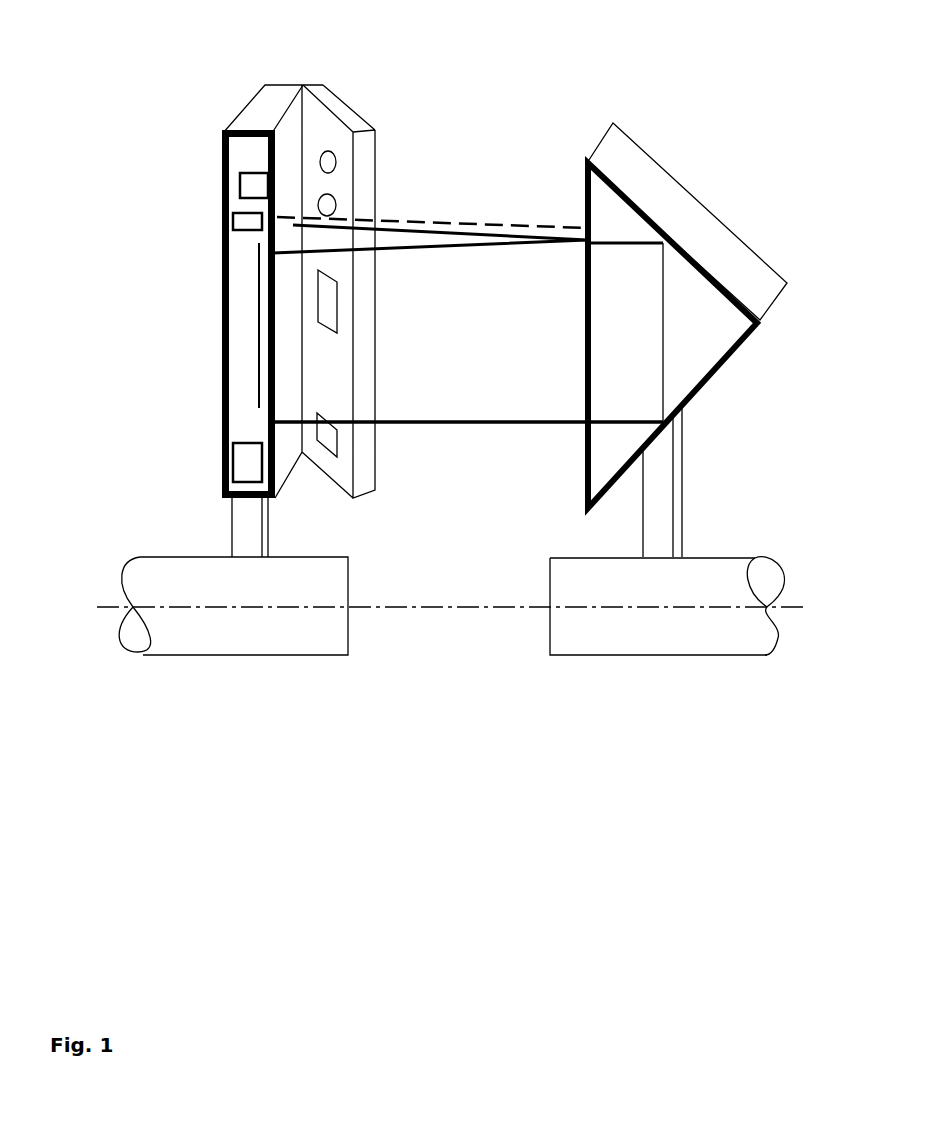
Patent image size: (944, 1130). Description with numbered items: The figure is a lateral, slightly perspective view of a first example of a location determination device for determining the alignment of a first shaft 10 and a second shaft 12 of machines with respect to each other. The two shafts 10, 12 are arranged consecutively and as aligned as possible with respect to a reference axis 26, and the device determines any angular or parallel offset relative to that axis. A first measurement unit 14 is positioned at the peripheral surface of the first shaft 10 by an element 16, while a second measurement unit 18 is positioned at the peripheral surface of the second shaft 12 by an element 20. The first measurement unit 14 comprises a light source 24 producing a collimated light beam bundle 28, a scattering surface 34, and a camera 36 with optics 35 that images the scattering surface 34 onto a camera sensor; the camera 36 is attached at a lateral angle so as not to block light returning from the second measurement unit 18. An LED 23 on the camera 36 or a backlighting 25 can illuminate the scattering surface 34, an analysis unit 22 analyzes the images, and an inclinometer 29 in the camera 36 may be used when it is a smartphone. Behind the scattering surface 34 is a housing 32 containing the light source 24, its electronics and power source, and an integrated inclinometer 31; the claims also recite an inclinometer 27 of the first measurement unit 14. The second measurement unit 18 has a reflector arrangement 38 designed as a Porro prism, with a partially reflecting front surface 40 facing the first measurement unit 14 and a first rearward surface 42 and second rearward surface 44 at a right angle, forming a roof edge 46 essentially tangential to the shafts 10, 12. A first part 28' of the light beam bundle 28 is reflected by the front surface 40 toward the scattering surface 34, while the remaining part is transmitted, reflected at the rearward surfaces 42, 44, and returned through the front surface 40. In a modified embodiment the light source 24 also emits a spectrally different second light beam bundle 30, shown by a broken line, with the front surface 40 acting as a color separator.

The reference axis 26 is at (437, 612).
The first shaft 10 is at (195, 633).
The second shaft 12 is at (717, 635).
The positioning element 16 is at (242, 528).
The positioning element 20 is at (662, 483).
The first measurement unit 14 is at (190, 402).
The scattering surface 34 is at (283, 288).
The inclinometer 31 is at (233, 184).
The light source 24 is at (243, 224).
The inclinometer 27 is at (242, 472).
The backlighting 25 is at (262, 317).
The optics 35 is at (328, 158).
The LED 23 is at (330, 204).
The analysis unit 22 is at (328, 302).
The inclinometer 29 is at (328, 440).
The light beam bundle 28 is at (468, 219).
The first part of the light beam bundle 28' is at (432, 132).
The second measurement unit 18 is at (745, 372).
The first rearward surface 42 is at (620, 196).
The second light beam bundle 30 is at (527, 230).
The housing 32 is at (224, 371).
The camera 36 is at (338, 182).
The reflector arrangement 38 is at (572, 365).
The front surface 40 is at (588, 323).
The second rearward surface 44 is at (703, 383).
The roof edge 46 is at (758, 323).